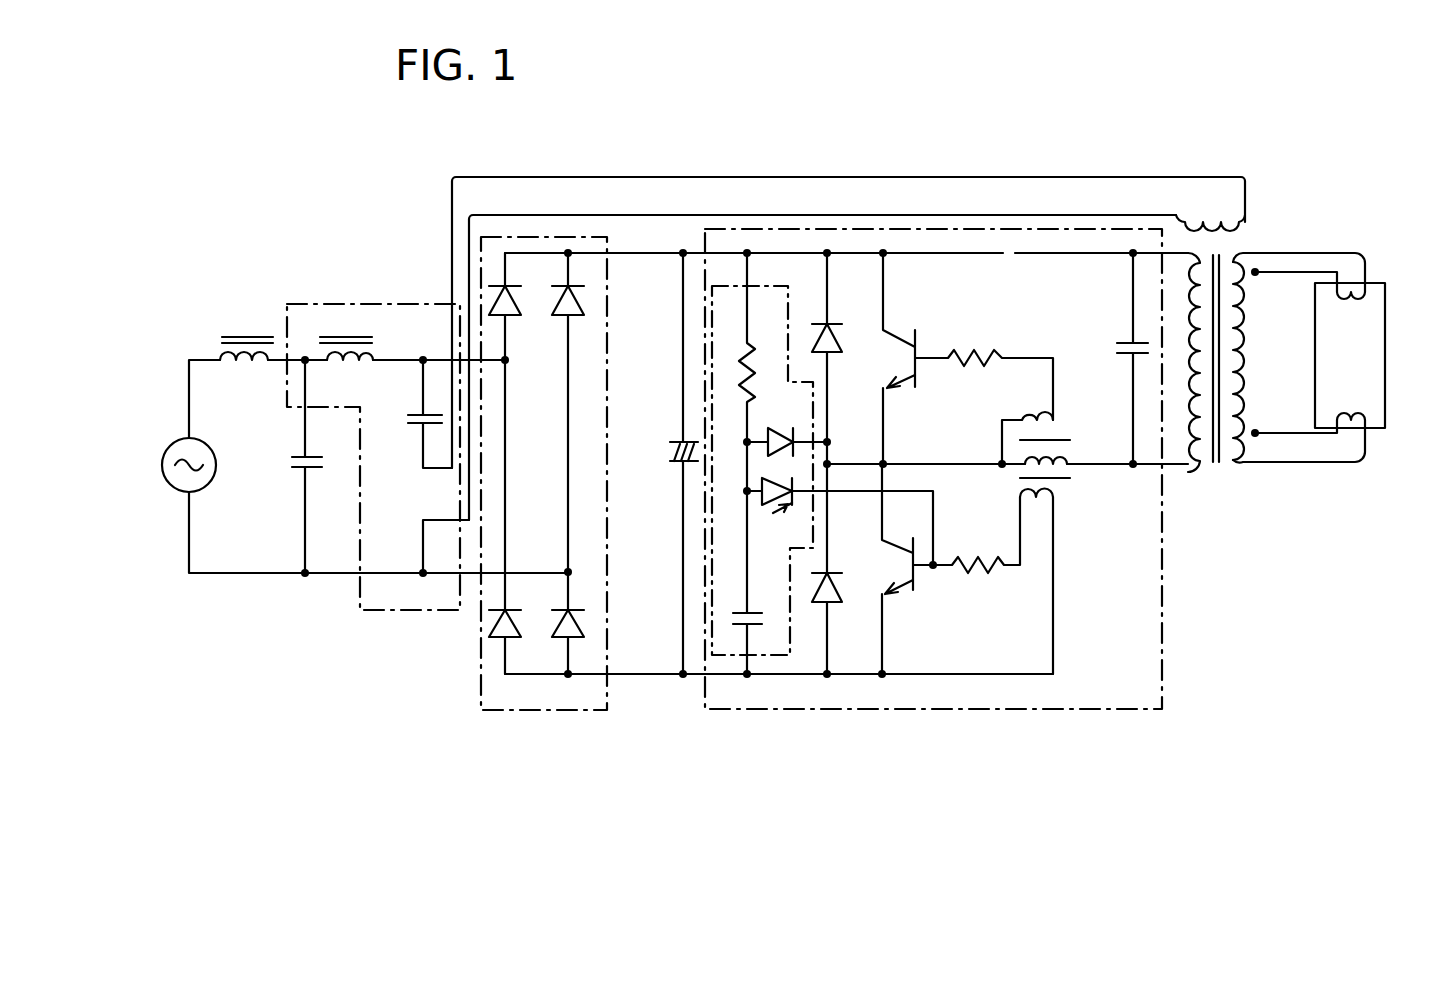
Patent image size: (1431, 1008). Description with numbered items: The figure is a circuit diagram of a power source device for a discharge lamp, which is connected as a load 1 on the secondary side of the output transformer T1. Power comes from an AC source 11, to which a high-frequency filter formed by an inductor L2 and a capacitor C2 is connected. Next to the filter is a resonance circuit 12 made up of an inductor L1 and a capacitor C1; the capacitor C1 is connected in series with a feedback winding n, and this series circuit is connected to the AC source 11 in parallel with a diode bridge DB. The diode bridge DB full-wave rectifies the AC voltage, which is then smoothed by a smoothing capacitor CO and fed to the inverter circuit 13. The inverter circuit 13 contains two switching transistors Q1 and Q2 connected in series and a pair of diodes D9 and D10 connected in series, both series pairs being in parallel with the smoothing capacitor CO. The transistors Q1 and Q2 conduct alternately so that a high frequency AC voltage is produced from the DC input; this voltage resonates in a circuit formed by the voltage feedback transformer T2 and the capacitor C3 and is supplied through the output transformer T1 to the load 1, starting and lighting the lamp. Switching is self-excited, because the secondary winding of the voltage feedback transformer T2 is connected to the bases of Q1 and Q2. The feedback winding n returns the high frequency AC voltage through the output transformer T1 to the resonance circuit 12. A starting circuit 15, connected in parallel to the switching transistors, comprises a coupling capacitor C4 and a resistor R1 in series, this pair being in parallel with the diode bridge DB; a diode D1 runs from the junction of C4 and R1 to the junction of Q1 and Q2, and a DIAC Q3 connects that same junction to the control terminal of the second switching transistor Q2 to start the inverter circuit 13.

The load (discharge lamp) 1 is at (1385, 340).
The AC source 11 is at (168, 452).
The resonance circuit 12 is at (348, 303).
The inverter circuit 13 is at (958, 710).
The starting circuit 15 is at (783, 286).
The inductor L1 is at (368, 336).
The inductor L2 is at (246, 329).
The capacitor C1 is at (414, 414).
The capacitor C2 is at (283, 466).
The capacitor C3 is at (1118, 358).
The coupling capacitor C4 is at (733, 627).
The smoothing capacitor CO is at (665, 463).
The diode bridge DB is at (573, 710).
The resistor R1 is at (740, 345).
The diode D1 is at (787, 424).
The diode D9 is at (840, 337).
The diode D10 is at (838, 580).
The switching transistor Q1 is at (968, 358).
The switching transistor Q2 is at (951, 569).
The DIAC Q3 is at (840, 502).
The output transformer T1 is at (1276, 380).
The voltage feedback transformer T2 is at (1059, 543).
The feedback winding n is at (1210, 201).